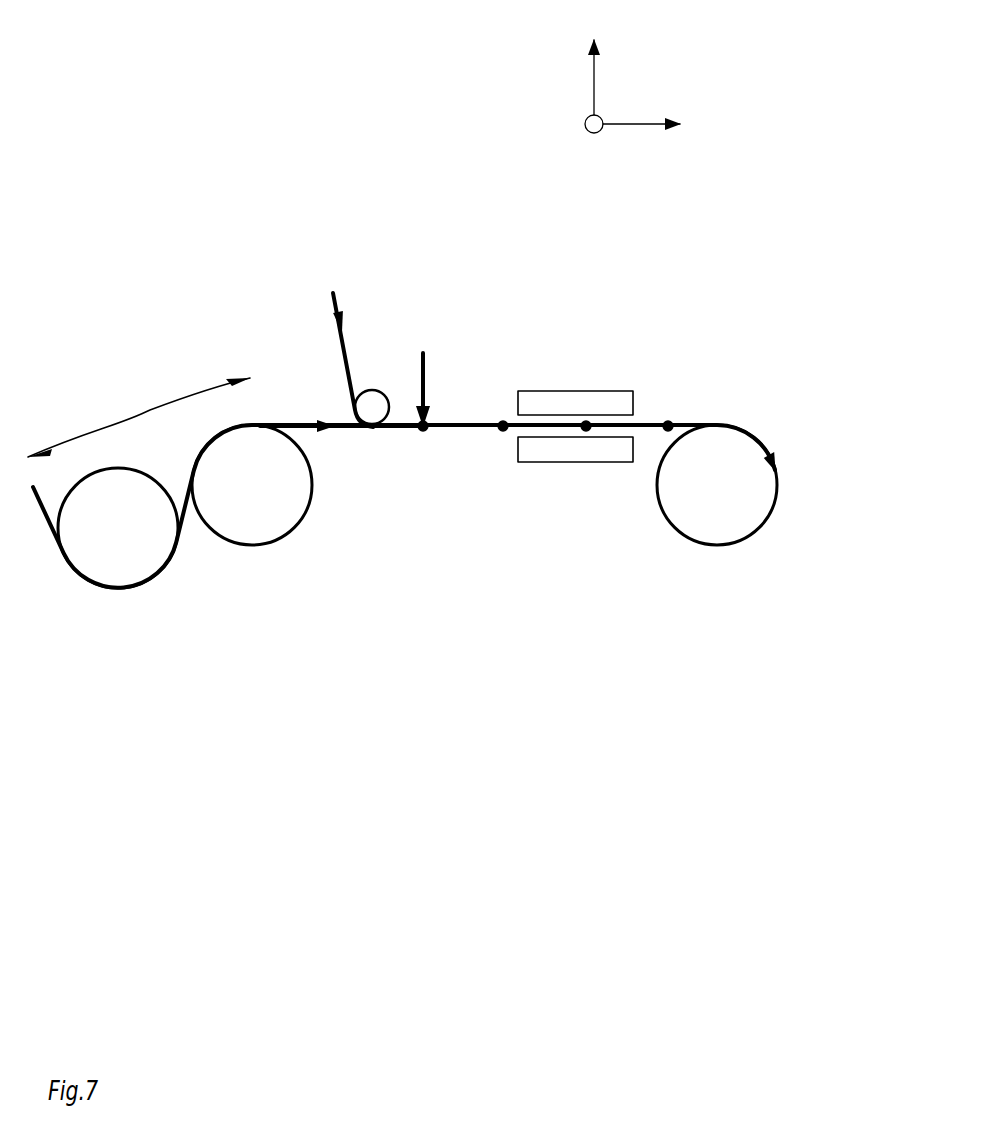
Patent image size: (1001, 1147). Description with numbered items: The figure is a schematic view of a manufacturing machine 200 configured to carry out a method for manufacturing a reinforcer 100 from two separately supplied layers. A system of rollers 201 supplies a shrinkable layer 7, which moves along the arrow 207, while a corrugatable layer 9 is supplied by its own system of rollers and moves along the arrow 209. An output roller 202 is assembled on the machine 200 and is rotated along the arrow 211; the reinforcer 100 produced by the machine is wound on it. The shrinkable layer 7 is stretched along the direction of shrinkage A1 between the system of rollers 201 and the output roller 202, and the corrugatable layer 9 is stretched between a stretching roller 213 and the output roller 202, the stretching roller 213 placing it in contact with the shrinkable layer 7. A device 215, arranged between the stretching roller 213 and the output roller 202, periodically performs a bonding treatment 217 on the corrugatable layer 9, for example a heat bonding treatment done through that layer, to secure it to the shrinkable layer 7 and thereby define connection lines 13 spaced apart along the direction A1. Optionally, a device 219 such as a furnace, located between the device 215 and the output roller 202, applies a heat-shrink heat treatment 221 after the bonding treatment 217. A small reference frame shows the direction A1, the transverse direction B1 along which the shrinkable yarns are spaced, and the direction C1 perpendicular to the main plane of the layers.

The manufacturing machine 200 is at (216, 218).
The system of rollers 201 is at (139, 413).
The output roller 202 is at (757, 424).
The arrow 207 is at (328, 418).
The arrow 209 is at (345, 320).
The corrugatable layer 9 is at (347, 357).
The stretching roller 213 is at (375, 407).
The device 215 is at (427, 367).
The bonding treatment 217 is at (427, 410).
The device 219 is at (587, 400).
The heat-shrink heat treatment 221 is at (566, 442).
The connection lines 13 is at (423, 430).
The reinforcer 100 is at (647, 423).
The shrinkable layer 7 is at (377, 428).
The arrow 211 is at (777, 457).
The direction of shrinkage A1 is at (654, 107).
The transverse direction B1 is at (585, 111).
The direction C1 is at (582, 59).